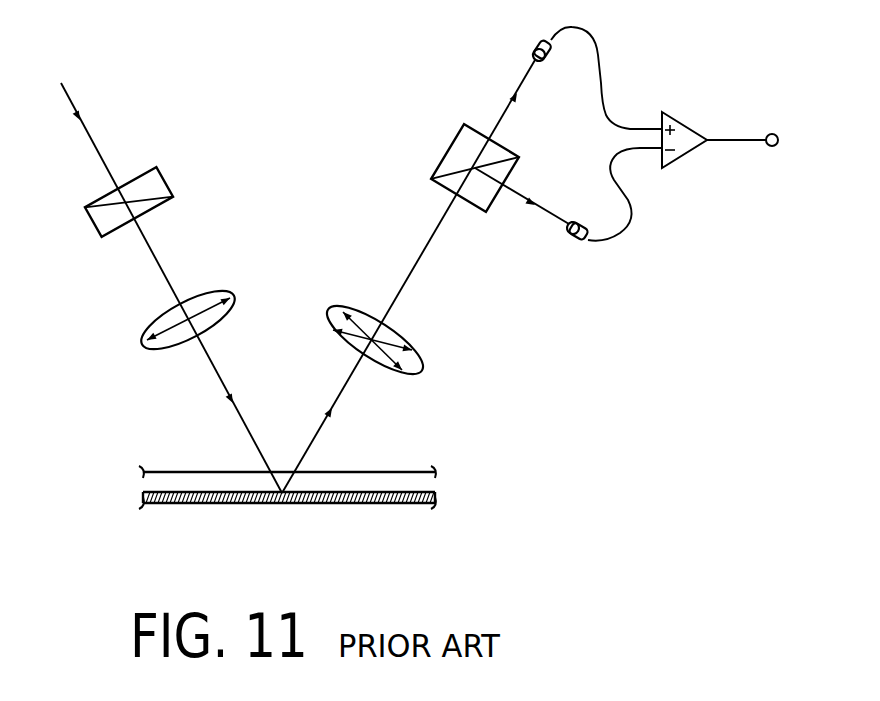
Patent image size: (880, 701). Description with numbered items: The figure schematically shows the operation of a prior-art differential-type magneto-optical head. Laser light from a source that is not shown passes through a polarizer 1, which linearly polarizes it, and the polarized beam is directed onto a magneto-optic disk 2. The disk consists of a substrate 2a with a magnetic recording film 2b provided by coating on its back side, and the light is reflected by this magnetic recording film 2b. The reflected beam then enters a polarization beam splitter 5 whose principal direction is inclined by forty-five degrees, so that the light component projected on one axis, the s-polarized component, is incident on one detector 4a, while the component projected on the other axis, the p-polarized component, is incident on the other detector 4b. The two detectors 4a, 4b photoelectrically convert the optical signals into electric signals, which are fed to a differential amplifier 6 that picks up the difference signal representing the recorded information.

The polarizer 1 is at (85, 208).
The magneto-optic disk 2 is at (280, 511).
The substrate 2a is at (146, 476).
The magnetic recording film 2b is at (187, 505).
The detector 4a is at (575, 243).
The detector 4b is at (534, 46).
The polarization beam splitter 5 is at (445, 148).
The differential amplifier 6 is at (687, 157).